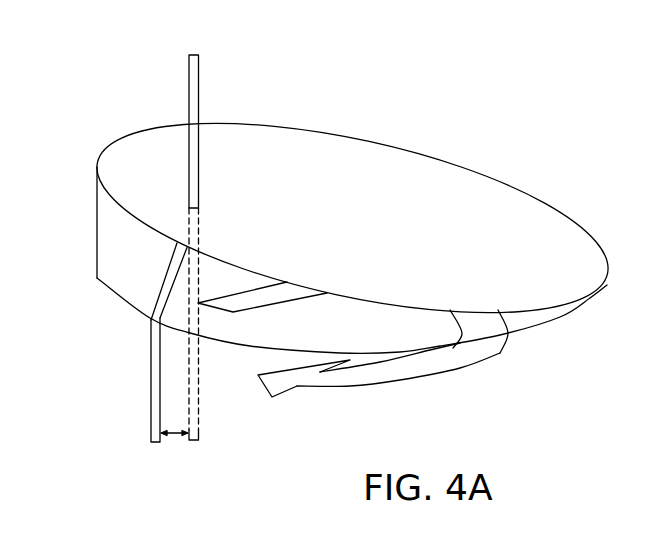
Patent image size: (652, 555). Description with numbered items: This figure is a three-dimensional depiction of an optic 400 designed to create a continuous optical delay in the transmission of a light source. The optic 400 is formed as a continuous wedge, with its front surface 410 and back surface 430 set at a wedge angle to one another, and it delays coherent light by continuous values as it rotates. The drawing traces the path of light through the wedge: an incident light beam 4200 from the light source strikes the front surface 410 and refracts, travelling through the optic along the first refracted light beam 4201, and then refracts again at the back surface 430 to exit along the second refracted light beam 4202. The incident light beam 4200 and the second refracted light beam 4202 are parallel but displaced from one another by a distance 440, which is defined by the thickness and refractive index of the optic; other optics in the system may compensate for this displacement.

The optic 400 is at (263, 35).
The front surface 410 is at (433, 160).
The incident light beam 4200 is at (199, 72).
The first refracted light beam 4201 is at (133, 293).
The second refracted light beam 4202 is at (148, 380).
The back surface 430 is at (216, 364).
The distance 440 is at (176, 449).